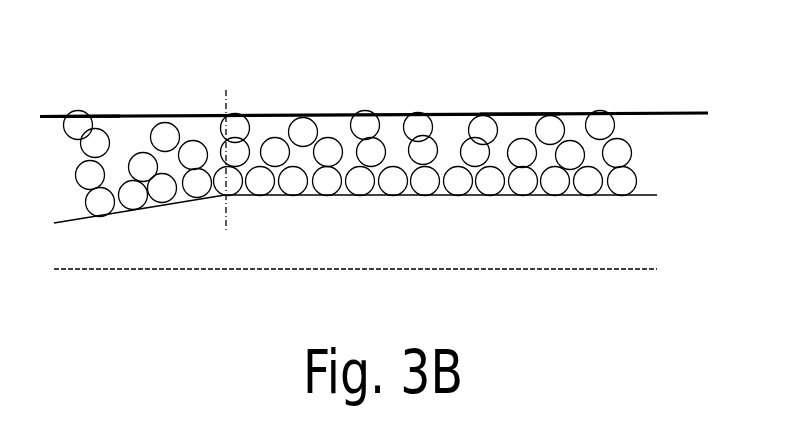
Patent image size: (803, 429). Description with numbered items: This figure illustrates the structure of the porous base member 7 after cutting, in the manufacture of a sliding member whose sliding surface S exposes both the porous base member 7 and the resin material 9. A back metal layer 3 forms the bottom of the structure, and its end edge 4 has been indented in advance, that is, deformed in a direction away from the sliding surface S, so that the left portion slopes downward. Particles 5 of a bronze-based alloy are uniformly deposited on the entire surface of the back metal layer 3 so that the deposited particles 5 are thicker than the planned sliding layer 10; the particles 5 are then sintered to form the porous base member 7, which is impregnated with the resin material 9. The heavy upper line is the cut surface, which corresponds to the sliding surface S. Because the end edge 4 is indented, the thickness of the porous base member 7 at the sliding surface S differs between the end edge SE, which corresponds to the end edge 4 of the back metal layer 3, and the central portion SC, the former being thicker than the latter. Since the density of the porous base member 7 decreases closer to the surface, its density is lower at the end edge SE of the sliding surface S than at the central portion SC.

The sliding surface S is at (673, 112).
The end edge SE is at (96, 114).
The central portion SC is at (519, 102).
The back metal layer 3 is at (692, 239).
The end edge 4 is at (90, 223).
The particles 5 is at (632, 150).
The porous base member 7 is at (416, 118).
The resin material 9 is at (122, 128).
The sliding layer 10 is at (684, 178).